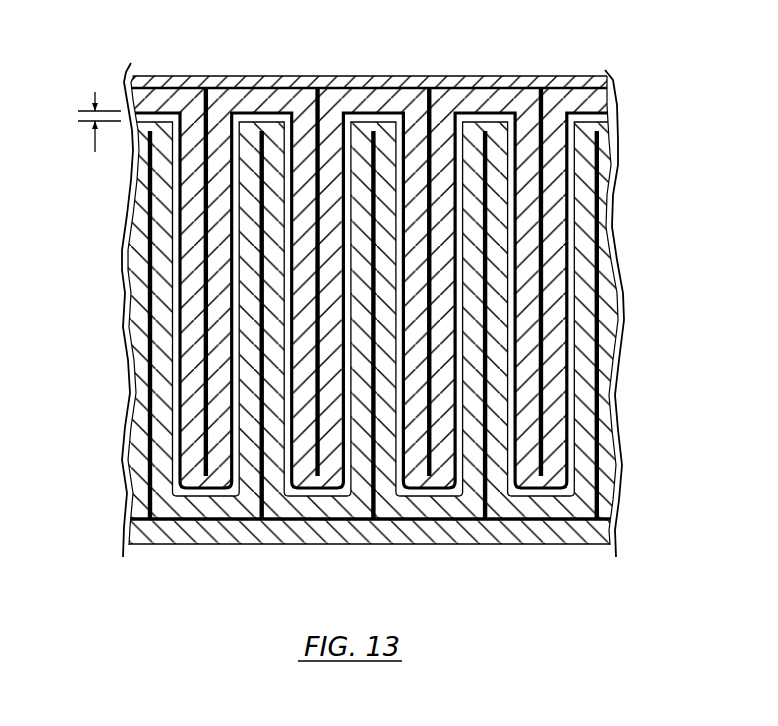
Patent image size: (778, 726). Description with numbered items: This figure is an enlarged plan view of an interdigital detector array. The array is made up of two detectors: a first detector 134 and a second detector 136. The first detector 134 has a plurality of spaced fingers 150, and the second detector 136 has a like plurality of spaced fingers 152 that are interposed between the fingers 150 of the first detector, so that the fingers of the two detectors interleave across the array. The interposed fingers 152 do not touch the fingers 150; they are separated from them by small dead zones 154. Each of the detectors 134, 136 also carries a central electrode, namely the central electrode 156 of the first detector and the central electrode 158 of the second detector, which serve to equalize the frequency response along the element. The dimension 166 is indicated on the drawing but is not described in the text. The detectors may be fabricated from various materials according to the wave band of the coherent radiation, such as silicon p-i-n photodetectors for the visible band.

The first detector 134 is at (417, 535).
The second detector 136 is at (347, 82).
The fingers 150 is at (140, 244).
The fingers 152 is at (197, 140).
The dead zones 154 is at (510, 230).
The central electrode 156 is at (566, 498).
The central electrode 158 is at (464, 88).
The separator thickness 166 is at (95, 150).